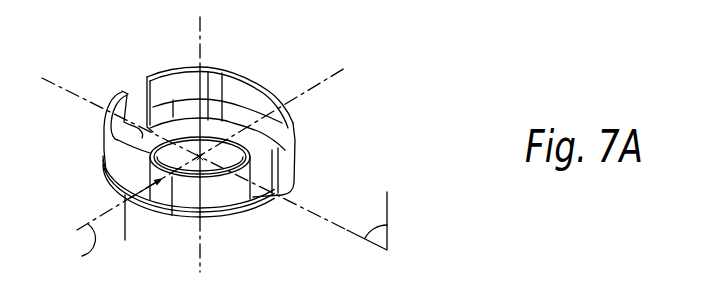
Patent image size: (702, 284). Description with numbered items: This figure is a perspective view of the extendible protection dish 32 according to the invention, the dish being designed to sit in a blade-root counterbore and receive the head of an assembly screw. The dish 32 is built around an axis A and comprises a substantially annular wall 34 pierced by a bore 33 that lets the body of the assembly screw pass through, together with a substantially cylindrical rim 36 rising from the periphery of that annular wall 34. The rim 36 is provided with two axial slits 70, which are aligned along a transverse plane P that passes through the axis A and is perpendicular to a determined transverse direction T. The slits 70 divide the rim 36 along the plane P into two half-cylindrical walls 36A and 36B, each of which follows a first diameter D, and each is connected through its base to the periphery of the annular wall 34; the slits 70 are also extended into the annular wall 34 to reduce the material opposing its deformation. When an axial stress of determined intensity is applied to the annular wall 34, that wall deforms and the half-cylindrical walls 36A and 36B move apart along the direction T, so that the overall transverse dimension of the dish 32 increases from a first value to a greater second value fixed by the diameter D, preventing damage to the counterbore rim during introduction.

The protection dish 32 is at (322, 153).
The bore 33 is at (225, 157).
The substantially annular wall 34 is at (188, 128).
The substantially cylindrical rim 36 is at (246, 62).
The half-cylindrical wall 36A is at (295, 117).
The half-cylindrical wall 36B is at (127, 172).
The axial slit 70 is at (138, 96).
The axis A is at (203, 260).
The transverse direction T is at (202, 170).
The transverse plane P is at (214, 164).
The first diameter D is at (142, 225).